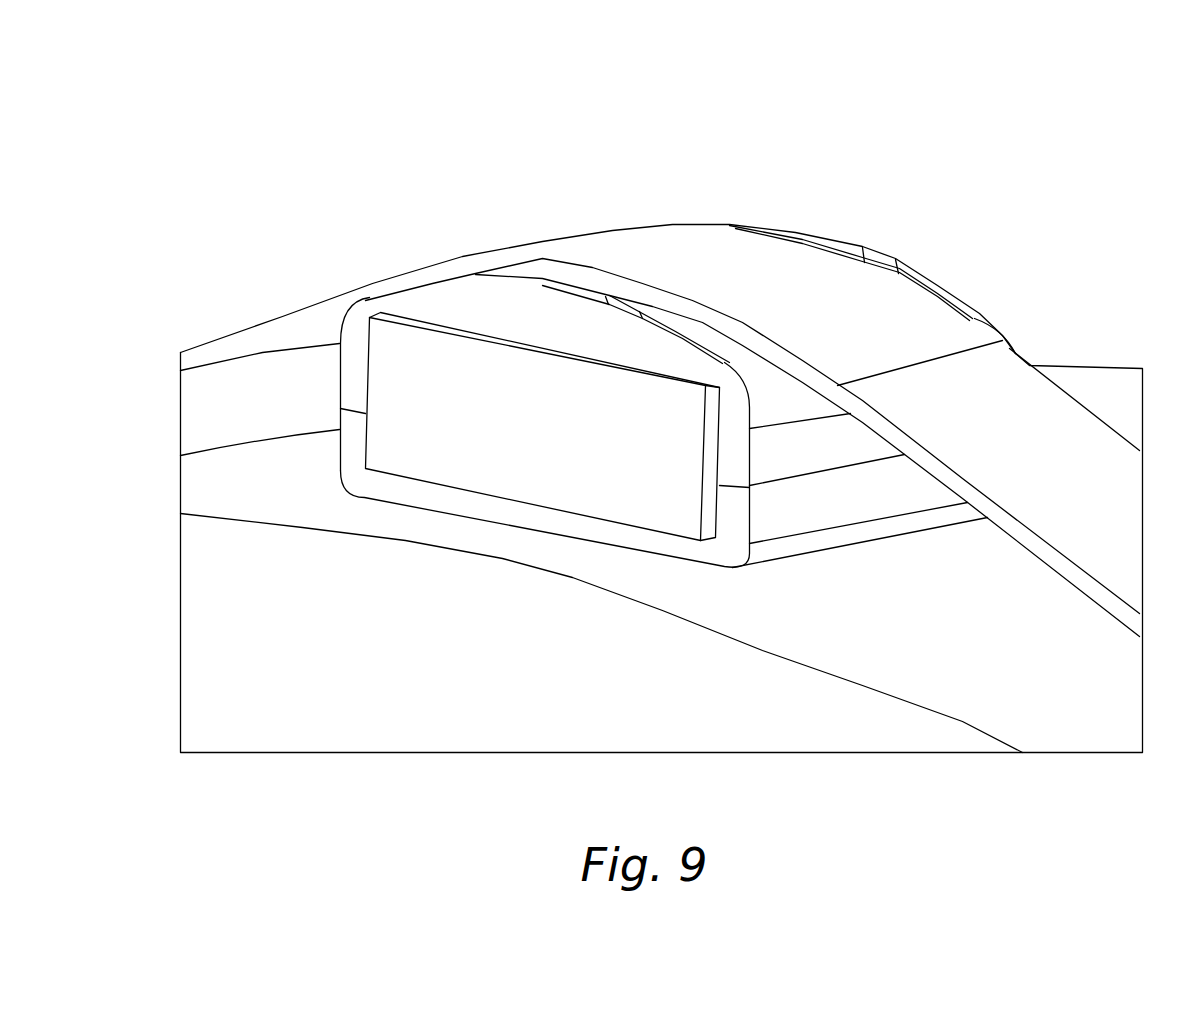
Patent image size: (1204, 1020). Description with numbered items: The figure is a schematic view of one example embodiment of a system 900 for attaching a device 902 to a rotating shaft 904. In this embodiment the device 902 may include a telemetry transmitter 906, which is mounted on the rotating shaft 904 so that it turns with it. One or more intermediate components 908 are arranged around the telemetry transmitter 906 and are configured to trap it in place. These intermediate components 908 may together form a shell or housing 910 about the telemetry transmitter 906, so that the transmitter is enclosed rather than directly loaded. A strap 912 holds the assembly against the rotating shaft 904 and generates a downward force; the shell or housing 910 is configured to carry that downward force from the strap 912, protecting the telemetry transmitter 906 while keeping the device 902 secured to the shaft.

The system 900 is at (1115, 79).
The device 902 is at (647, 438).
The rotating shaft 904 is at (460, 653).
The telemetry transmitter 906 is at (434, 401).
The intermediate components 908 is at (632, 206).
The shell or housing 910 is at (849, 584).
The strap 912 is at (688, 240).